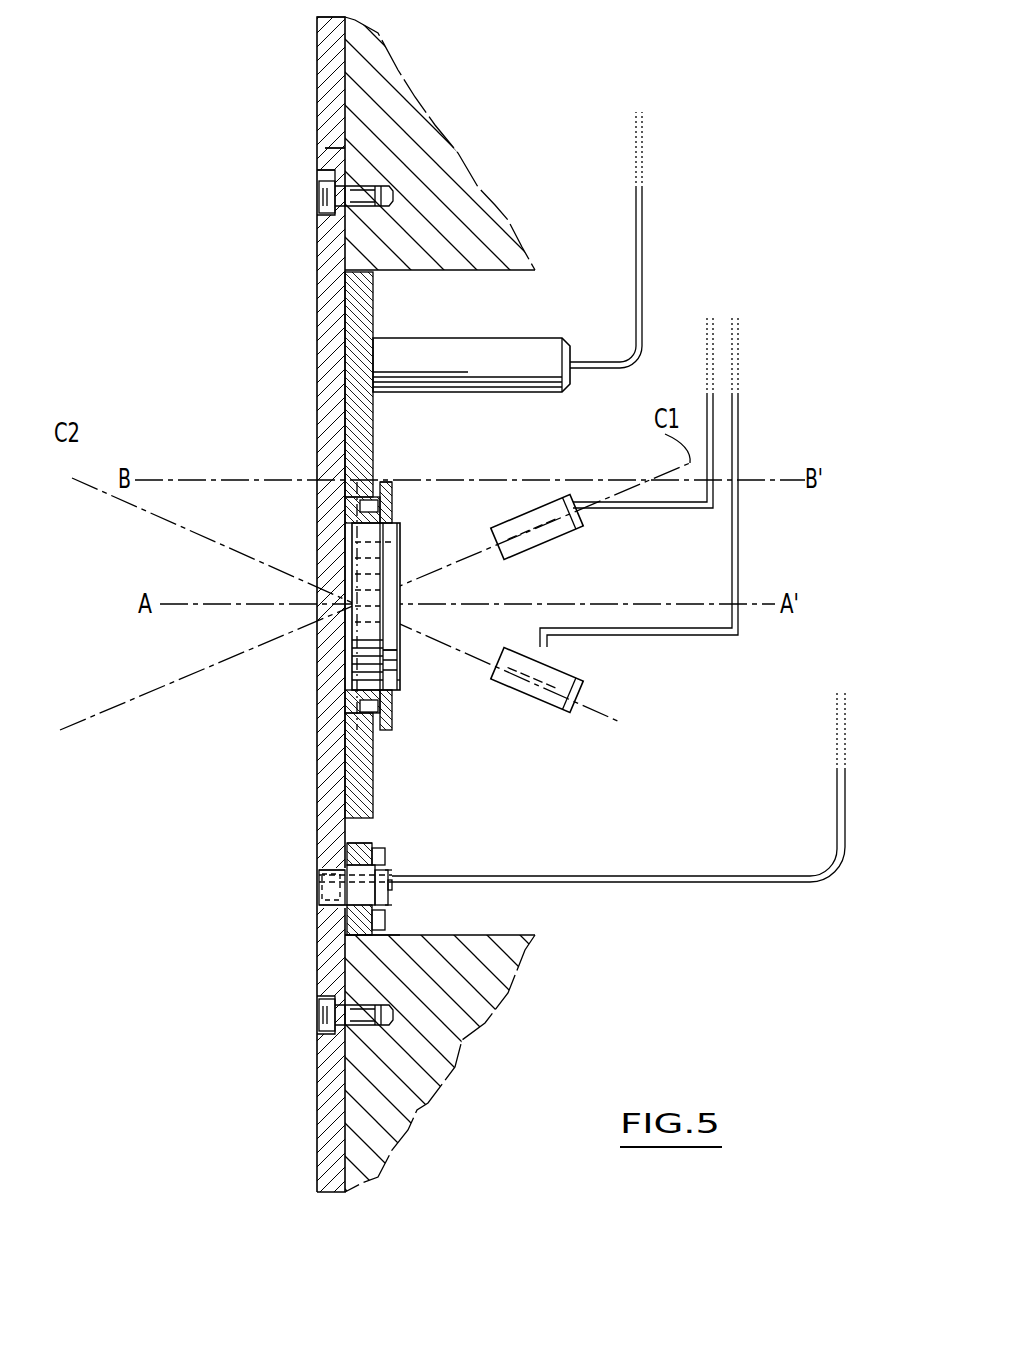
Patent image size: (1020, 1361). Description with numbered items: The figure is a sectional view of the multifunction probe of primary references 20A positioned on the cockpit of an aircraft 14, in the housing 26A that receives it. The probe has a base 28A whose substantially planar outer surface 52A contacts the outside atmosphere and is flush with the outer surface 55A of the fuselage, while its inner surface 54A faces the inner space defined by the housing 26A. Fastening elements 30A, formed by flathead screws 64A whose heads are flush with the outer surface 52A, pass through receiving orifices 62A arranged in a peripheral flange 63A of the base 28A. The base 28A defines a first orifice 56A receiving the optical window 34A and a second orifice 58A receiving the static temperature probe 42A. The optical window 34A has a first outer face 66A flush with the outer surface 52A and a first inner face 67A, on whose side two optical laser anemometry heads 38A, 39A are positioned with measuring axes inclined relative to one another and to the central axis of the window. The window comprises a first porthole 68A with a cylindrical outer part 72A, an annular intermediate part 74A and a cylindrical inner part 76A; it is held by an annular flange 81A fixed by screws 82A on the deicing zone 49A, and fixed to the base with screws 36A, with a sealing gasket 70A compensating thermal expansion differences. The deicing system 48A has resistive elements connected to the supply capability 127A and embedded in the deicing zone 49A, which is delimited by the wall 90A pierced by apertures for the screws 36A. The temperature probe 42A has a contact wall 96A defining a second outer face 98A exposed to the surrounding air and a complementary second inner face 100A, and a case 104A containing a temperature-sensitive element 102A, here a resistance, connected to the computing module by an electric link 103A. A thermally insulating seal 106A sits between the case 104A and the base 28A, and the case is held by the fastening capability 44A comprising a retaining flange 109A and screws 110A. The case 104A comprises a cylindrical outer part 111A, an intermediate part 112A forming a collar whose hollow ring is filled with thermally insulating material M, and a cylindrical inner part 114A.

The aircraft 14 is at (306, 1165).
The multifunction probe of primary references 20A is at (316, 965).
The housing 26A is at (517, 772).
The base 28A is at (314, 293).
The fastening elements 30A is at (362, 193).
The optical window 34A is at (314, 600).
The screws 36A is at (407, 503).
The optical laser anemometry head 38A is at (587, 683).
The optical laser anemometry head 39A is at (582, 530).
The static temperature probe 42A is at (398, 905).
The fastening capability 44A is at (408, 937).
The deicing system 48A is at (320, 378).
The deicing zone 49A is at (357, 307).
The outer surface 52A is at (320, 1055).
The inner surface 54A is at (320, 1085).
The outer surface of the fuselage 55A is at (314, 52).
The first orifice 56A is at (345, 565).
The second orifice 58A is at (318, 878).
The receiving orifices 62A is at (316, 232).
The peripheral flange 63A is at (330, 148).
The flathead screws 64A is at (320, 188).
The first outer face 66A is at (314, 545).
The first inner face 67A is at (404, 682).
The first porthole 68A is at (420, 527).
The sealing gasket 70A is at (318, 700).
The cylindrical outer part 72A is at (318, 670).
The annular intermediate part 74A is at (343, 523).
The inner part 76A is at (398, 650).
The annular flange 81A is at (330, 498).
The screws 82A is at (372, 733).
The wall 90A is at (377, 437).
The contact wall 96A is at (320, 900).
The second outer face 98A is at (320, 890).
The second inner face 100A is at (368, 860).
The temperature-sensitive element 102A is at (322, 882).
The electric link 103A is at (718, 885).
The case 104A is at (400, 897).
The thermally insulating seal 106A is at (320, 1000).
The retaining flange 109A is at (372, 937).
The screws 110A is at (402, 938).
The cylindrical outer part 111A is at (320, 908).
The intermediate part 112A is at (455, 1070).
The inner part 114A is at (397, 888).
The supply capability 127A is at (600, 360).
The thermally insulating material M is at (362, 842).